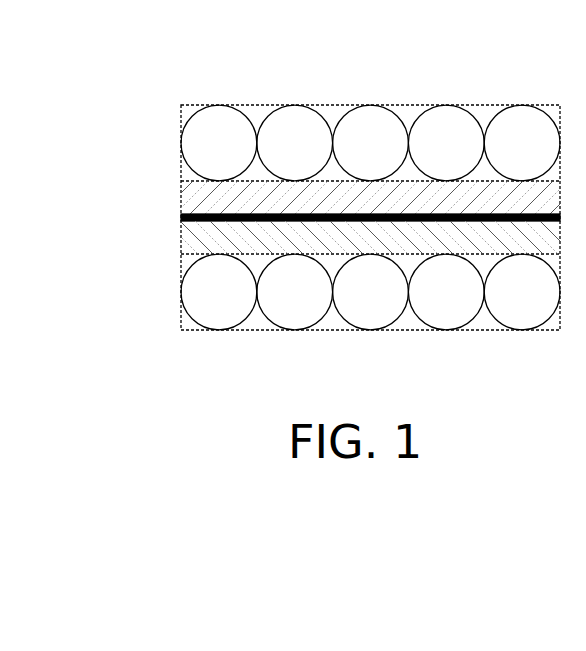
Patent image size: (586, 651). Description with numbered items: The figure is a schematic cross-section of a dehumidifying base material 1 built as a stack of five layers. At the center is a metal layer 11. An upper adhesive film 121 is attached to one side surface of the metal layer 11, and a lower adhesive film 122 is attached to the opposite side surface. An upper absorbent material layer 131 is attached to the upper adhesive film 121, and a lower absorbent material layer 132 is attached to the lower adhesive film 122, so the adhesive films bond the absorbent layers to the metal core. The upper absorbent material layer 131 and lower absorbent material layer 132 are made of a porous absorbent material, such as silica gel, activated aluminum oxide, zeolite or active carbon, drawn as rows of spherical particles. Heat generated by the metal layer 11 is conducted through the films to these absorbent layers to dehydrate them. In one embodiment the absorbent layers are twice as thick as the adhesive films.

The dehumidifying base material 1 is at (186, 91).
The metal layer 11 is at (182, 218).
The upper adhesive film 121 is at (190, 197).
The lower adhesive film 122 is at (190, 233).
The upper absorbent material layer 131 is at (181, 173).
The lower absorbent material layer 132 is at (182, 258).